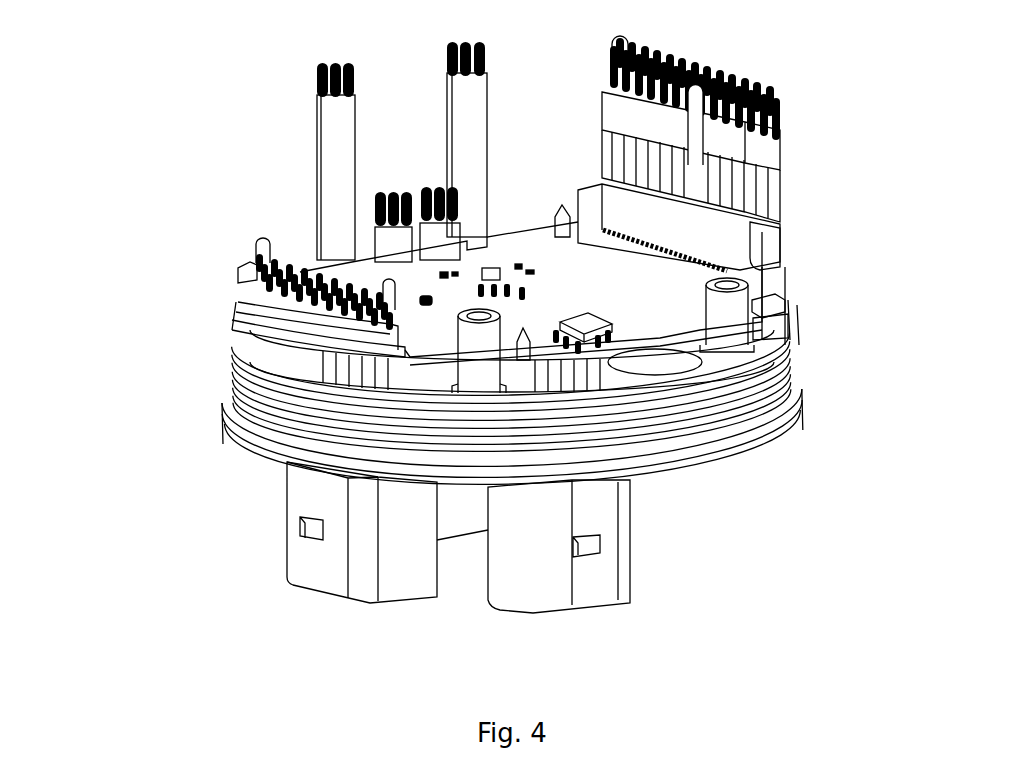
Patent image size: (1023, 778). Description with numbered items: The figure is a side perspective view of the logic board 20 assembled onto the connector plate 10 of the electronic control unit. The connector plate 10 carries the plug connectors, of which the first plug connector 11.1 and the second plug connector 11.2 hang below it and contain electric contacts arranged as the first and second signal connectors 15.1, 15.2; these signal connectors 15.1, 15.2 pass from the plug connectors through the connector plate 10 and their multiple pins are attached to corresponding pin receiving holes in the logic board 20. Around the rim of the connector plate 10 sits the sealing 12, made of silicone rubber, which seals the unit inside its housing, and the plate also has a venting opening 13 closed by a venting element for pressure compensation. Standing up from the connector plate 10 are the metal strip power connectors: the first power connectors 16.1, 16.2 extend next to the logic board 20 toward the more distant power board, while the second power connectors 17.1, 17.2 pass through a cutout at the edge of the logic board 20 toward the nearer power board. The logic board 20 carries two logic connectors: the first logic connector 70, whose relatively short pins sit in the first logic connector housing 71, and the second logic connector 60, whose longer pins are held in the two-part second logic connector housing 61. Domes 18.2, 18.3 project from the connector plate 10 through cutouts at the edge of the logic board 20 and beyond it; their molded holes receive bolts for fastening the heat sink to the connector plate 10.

The connector plate 10 is at (220, 412).
The first plug connector 11.1 is at (288, 527).
The second plug connector 11.2 is at (640, 548).
The sealing 12 is at (223, 353).
The venting opening 13 is at (657, 357).
The first signal connector 15.1 is at (587, 343).
The second signal connector 15.2 is at (527, 292).
The first power connector 16.1 is at (330, 146).
The first power connector 16.2 is at (477, 180).
The second power connector 17.1 is at (392, 242).
The second power connector 17.2 is at (452, 237).
The dome 18.2 is at (472, 373).
The dome 18.3 is at (737, 308).
The logic board 20 is at (640, 290).
The second logic connector 60 is at (775, 198).
The second logic connector housing 61 is at (783, 145).
The first logic connector 70 is at (243, 293).
The first logic connector housing 71 is at (240, 292).